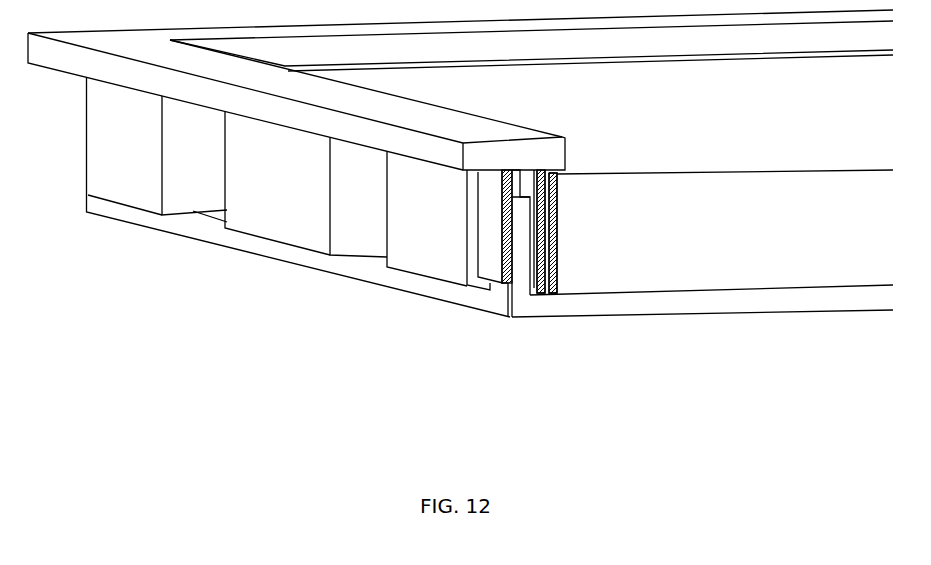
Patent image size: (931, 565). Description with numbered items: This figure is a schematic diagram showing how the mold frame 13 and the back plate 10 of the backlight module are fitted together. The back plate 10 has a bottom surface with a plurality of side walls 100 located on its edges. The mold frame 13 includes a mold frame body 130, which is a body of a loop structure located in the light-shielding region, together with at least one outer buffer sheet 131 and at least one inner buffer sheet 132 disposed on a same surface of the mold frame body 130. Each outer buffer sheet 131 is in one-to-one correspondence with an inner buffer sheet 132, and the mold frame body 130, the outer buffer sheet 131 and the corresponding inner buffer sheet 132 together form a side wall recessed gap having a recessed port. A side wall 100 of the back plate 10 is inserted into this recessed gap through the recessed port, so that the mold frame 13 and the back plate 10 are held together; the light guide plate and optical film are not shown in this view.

The back plate 10 is at (281, 253).
The mold frame 13 is at (477, 305).
The side wall 100 is at (523, 227).
The mold frame body 130 is at (417, 147).
The outer buffer sheet 131 is at (438, 237).
The inner buffer sheet 132 is at (573, 293).